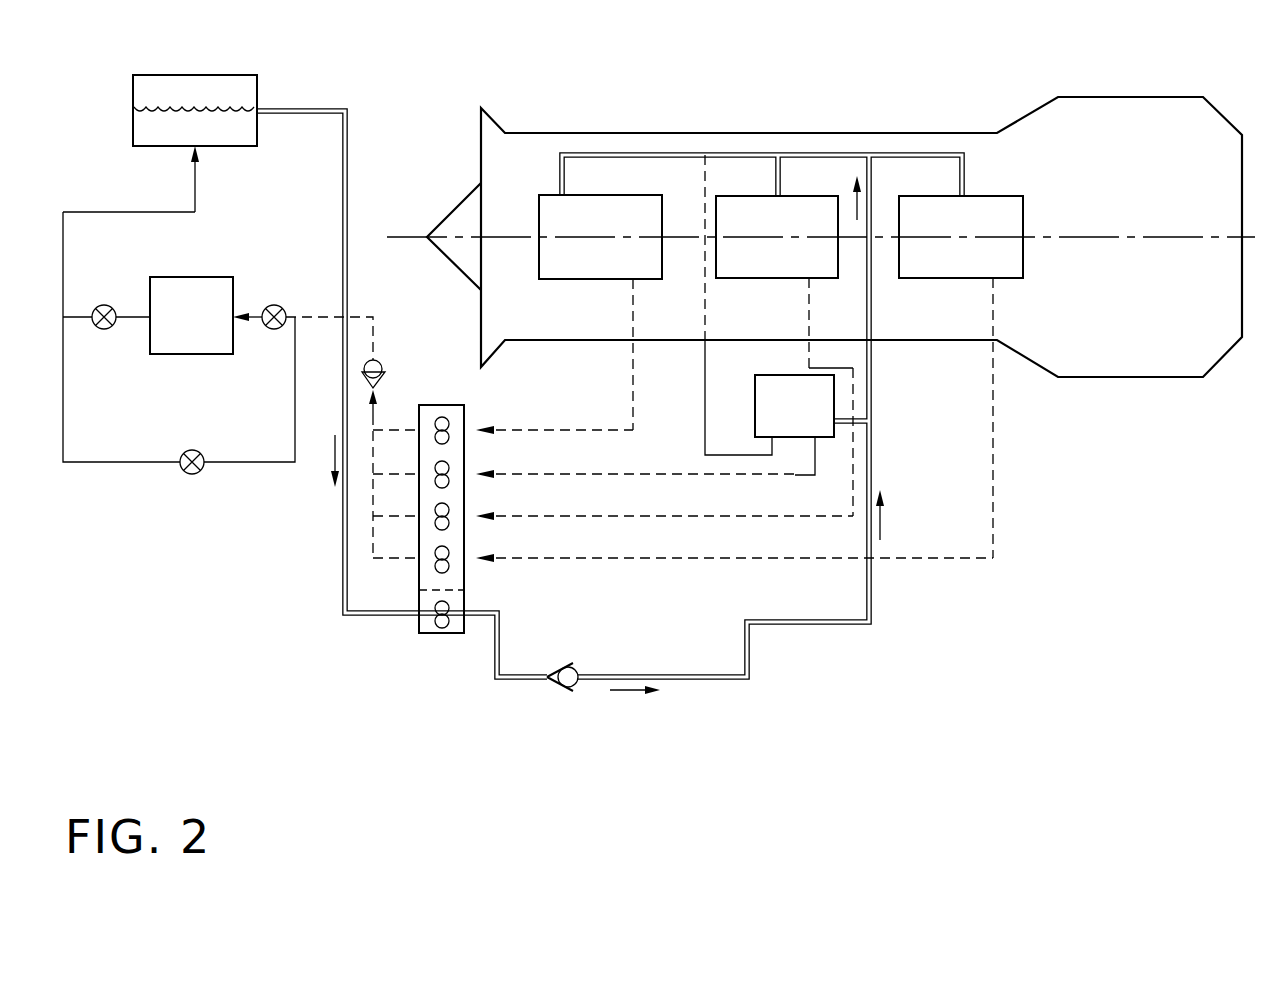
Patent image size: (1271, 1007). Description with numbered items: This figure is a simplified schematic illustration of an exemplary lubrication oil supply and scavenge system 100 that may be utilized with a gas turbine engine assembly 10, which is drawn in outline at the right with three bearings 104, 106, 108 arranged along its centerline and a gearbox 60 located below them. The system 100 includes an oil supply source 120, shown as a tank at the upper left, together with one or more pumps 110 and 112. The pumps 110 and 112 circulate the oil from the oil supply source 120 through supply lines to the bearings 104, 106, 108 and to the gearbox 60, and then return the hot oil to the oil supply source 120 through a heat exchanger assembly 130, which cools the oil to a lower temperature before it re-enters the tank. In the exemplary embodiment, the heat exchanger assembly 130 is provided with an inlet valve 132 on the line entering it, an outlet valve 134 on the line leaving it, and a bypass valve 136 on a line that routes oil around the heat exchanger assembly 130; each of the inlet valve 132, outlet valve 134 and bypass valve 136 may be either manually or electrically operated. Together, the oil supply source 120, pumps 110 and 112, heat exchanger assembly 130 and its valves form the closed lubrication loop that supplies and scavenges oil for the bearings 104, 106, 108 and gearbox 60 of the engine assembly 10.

The gas turbine engine assembly 10 is at (1118, 97).
The gearbox 60 is at (773, 416).
The lubrication oil supply and scavenge system 100 is at (1003, 626).
The bearing 104 is at (579, 229).
The bearing 106 is at (756, 229).
The bearing 108 is at (940, 229).
The pump 110 is at (441, 633).
The pump 112 is at (448, 421).
The oil supply source 120 is at (220, 75).
The heat exchanger assembly 130 is at (171, 329).
The inlet valve 132 is at (276, 305).
The outlet valve 134 is at (102, 330).
The bypass valve 136 is at (192, 450).